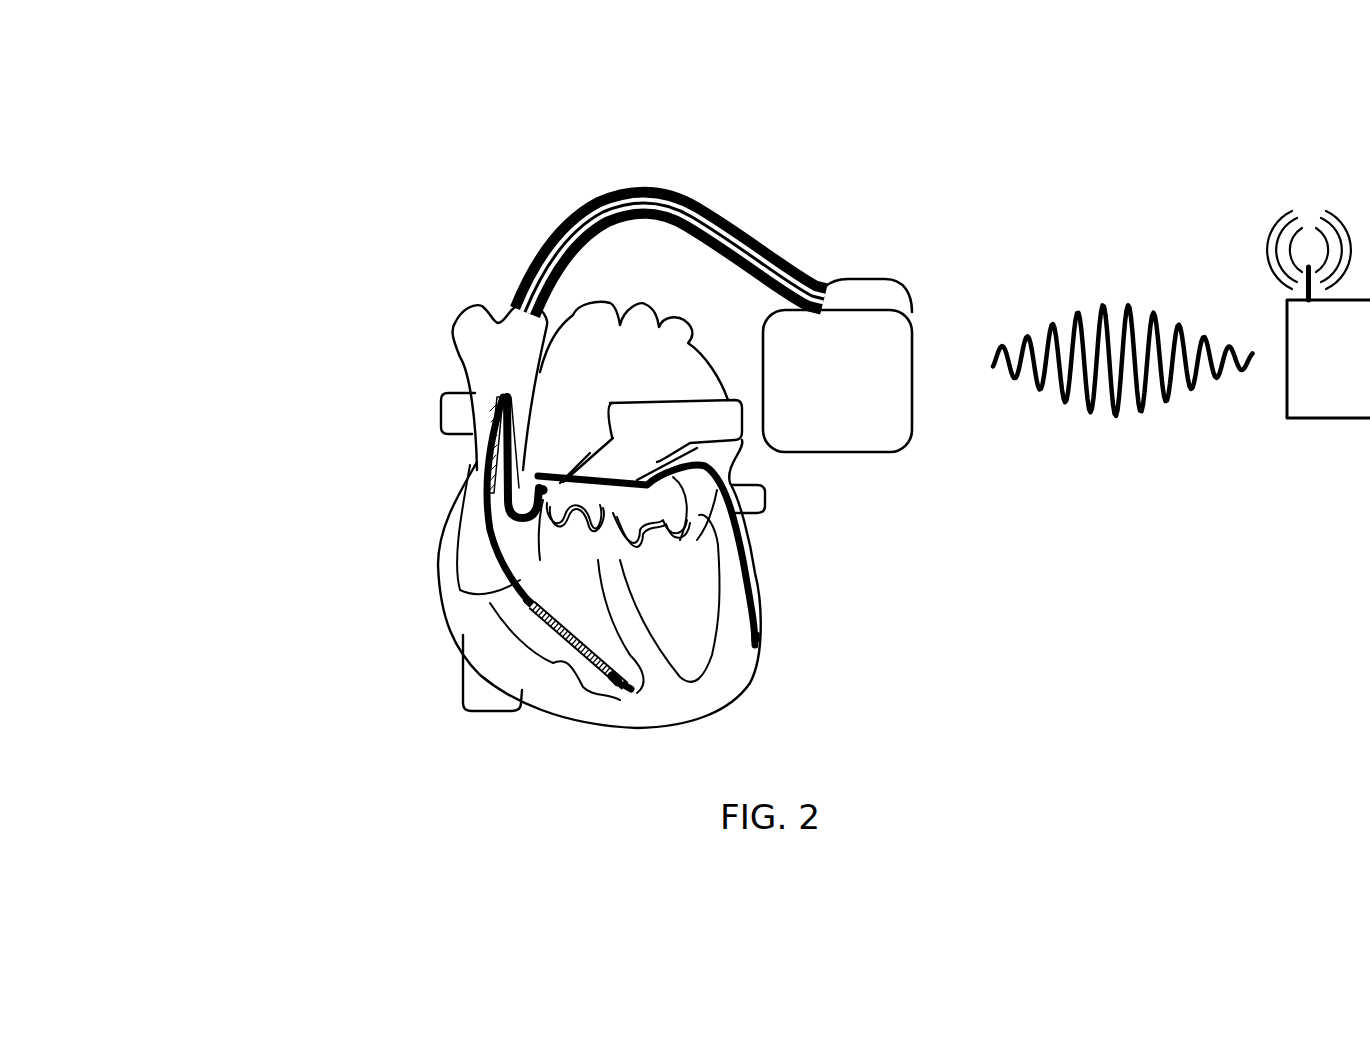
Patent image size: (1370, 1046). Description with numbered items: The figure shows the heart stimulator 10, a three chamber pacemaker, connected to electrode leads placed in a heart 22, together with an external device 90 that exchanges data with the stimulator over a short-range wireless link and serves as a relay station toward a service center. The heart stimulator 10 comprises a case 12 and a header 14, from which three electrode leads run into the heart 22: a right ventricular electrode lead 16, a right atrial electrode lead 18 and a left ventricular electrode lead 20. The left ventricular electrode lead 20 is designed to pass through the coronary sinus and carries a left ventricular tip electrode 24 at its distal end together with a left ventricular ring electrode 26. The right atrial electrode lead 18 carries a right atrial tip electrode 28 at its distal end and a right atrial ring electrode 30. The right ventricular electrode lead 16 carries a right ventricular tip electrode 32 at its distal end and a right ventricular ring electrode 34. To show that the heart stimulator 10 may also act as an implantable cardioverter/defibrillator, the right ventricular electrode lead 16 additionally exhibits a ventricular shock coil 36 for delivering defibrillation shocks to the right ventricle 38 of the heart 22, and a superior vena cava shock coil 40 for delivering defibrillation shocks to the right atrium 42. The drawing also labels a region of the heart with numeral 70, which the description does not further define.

The heart stimulator 10 is at (957, 333).
The case 12 is at (873, 400).
The header 14 is at (890, 288).
The right ventricular electrode lead 16 is at (763, 255).
The right atrial electrode lead 18 is at (722, 223).
The left ventricular electrode lead 20 is at (692, 205).
The heart 22 is at (232, 543).
The left ventricular tip electrode 24 is at (760, 650).
The left ventricular ring electrode 26 is at (758, 637).
The right atrial tip electrode 28 is at (540, 493).
The right atrial ring electrode 30 is at (535, 503).
The right ventricular tip electrode 32 is at (630, 690).
The right ventricular ring electrode 34 is at (628, 683).
The ventricular shock coil 36 is at (550, 633).
The right ventricle 38 is at (510, 613).
The superior vena cava shock coil 40 is at (487, 430).
The right atrium 42 is at (485, 565).
The left ventricle 70 is at (683, 585).
The external device 90 is at (1315, 447).